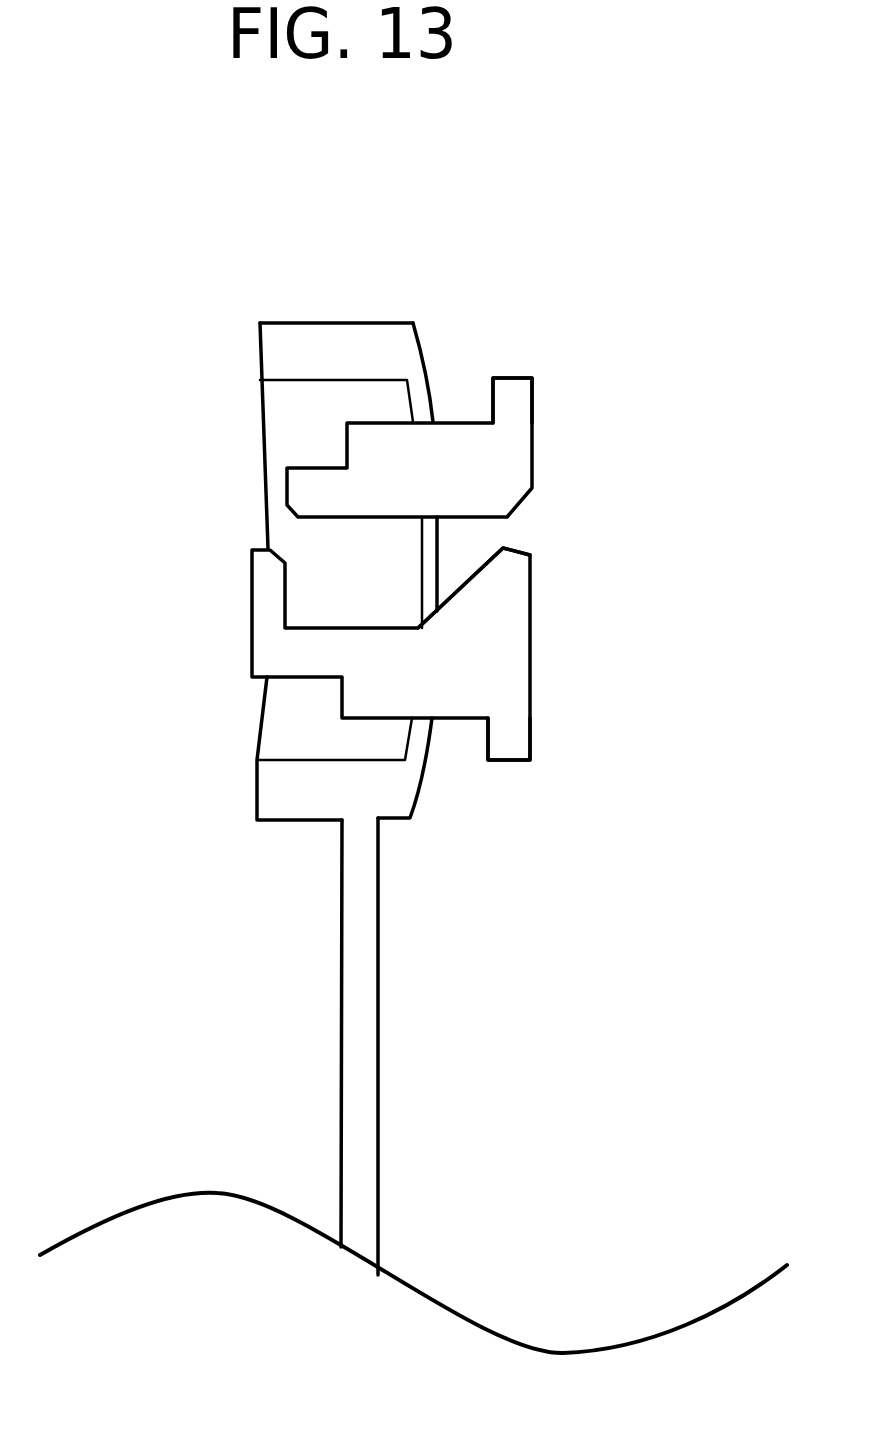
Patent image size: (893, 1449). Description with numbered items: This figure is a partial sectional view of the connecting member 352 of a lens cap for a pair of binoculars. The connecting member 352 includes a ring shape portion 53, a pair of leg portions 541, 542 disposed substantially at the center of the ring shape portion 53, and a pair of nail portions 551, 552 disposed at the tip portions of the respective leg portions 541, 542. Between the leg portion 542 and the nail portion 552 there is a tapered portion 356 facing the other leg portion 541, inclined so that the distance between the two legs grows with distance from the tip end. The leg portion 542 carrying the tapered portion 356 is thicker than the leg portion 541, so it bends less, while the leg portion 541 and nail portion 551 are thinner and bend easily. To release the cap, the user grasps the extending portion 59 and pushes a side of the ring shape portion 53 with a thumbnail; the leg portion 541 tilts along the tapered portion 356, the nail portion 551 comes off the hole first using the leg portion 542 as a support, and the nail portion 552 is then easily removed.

The connecting member 352 is at (222, 378).
The ring shape portion 53 is at (322, 340).
The leg portion 541 is at (427, 470).
The leg portion 542 is at (400, 677).
The nail portion 551 is at (512, 397).
The nail portion 552 is at (510, 738).
The tapered portion 356 is at (462, 578).
The extending portion 59 is at (362, 985).